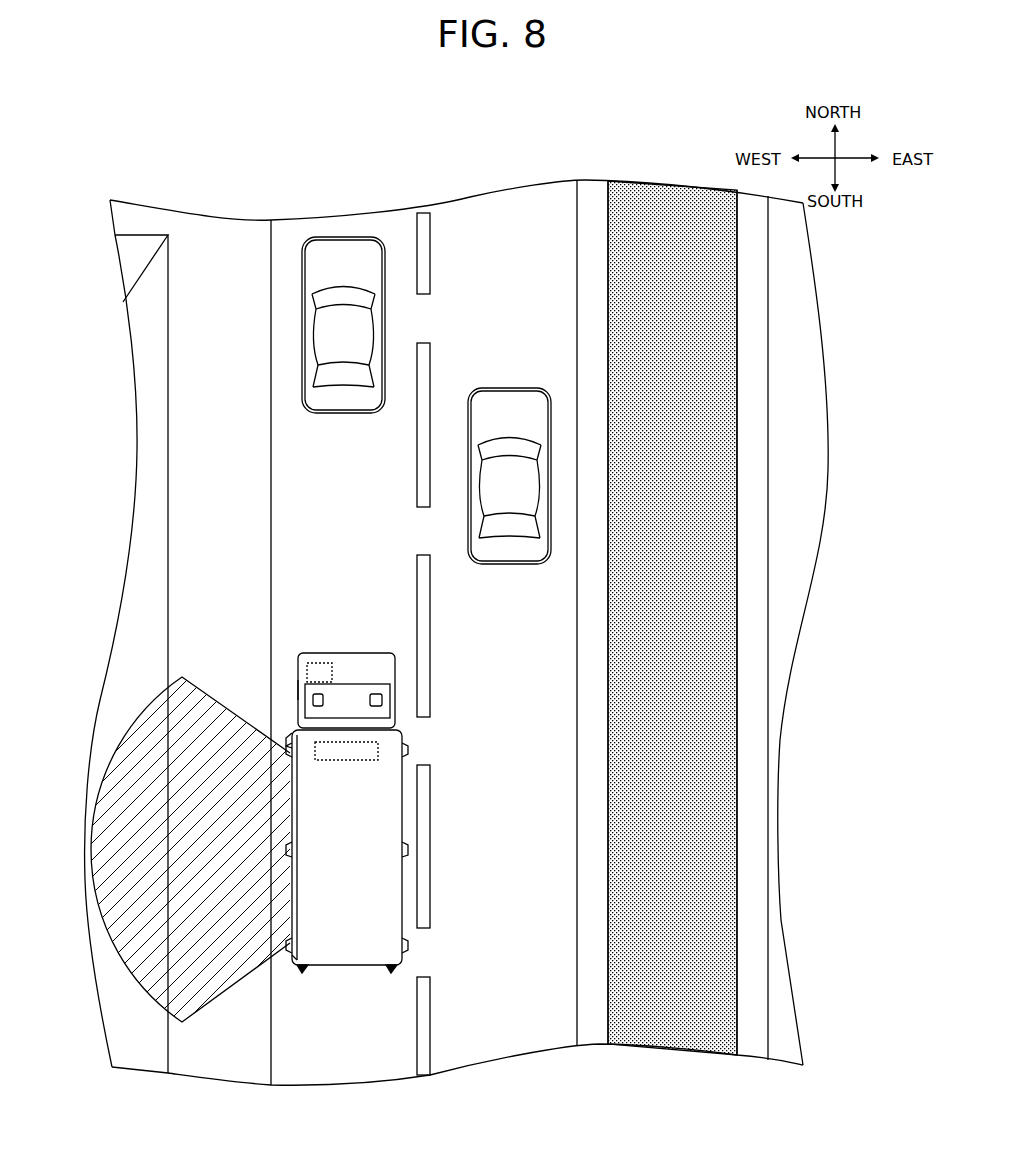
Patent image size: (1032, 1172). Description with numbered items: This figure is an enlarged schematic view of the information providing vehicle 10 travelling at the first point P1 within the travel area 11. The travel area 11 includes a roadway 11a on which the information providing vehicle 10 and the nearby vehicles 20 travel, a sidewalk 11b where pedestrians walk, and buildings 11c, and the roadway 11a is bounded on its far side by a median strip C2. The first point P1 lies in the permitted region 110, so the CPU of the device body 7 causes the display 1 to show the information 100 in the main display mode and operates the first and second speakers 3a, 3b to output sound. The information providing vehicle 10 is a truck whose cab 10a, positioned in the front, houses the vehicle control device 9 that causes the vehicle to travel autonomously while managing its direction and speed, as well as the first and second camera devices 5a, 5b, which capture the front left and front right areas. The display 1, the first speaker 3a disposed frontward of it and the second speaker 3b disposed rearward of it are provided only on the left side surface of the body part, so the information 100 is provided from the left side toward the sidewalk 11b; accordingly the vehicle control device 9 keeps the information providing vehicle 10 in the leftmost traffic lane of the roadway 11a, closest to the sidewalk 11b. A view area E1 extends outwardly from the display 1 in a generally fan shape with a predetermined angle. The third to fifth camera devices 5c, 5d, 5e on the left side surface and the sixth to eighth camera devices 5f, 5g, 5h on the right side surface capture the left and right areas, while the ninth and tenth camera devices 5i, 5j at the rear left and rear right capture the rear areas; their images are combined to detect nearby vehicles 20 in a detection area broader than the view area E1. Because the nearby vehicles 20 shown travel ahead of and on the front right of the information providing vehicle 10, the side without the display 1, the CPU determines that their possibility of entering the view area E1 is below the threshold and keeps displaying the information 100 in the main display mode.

The display 1 is at (308, 826).
The first speaker 3a is at (292, 732).
The second speaker 3b is at (300, 962).
The first camera device 5a is at (307, 688).
The second camera device 5b is at (383, 700).
The third camera device 5c is at (295, 755).
The fourth camera device 5d is at (295, 852).
The fifth camera device 5e is at (295, 945).
The sixth camera device 5f is at (410, 752).
The seventh camera device 5g is at (410, 852).
The eighth camera device 5h is at (410, 945).
The ninth camera device 5i is at (300, 972).
The tenth camera device 5j is at (390, 972).
The device body 7 is at (372, 760).
The vehicle control device 9 is at (333, 672).
The information providing vehicle 10 is at (333, 645).
The cab 10a is at (377, 655).
The travel area 11 is at (600, 146).
The roadway 11a is at (493, 208).
The sidewalk 11b is at (229, 232).
The buildings 11c is at (146, 381).
The nearby vehicles 20 is at (342, 398).
The information 100 is at (118, 888).
The permitted region 110 is at (540, 1005).
The view area E1 is at (92, 805).
The first point P1 is at (540, 603).
The median strip C2 is at (690, 742).